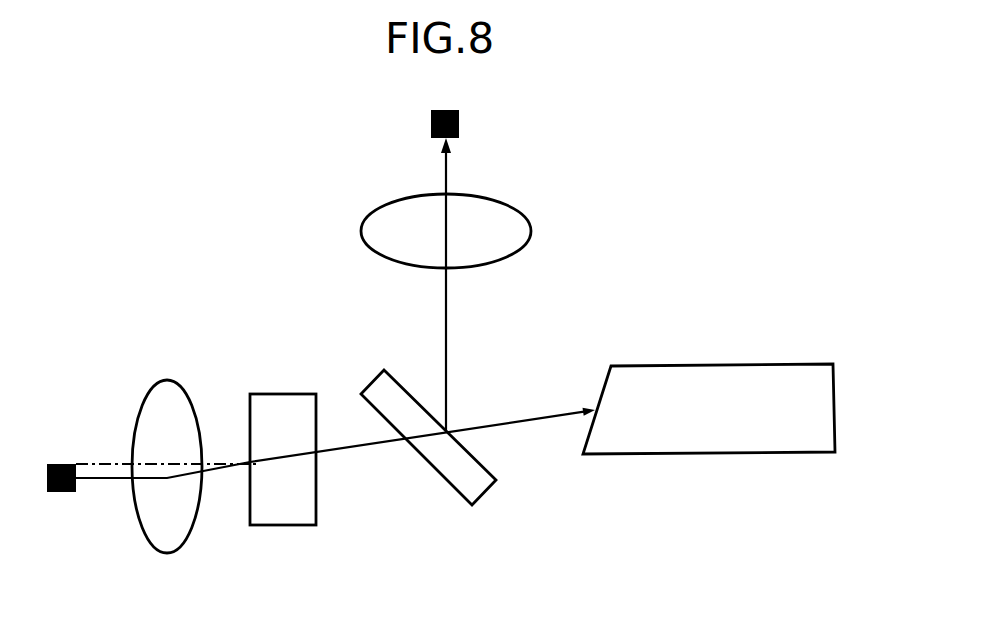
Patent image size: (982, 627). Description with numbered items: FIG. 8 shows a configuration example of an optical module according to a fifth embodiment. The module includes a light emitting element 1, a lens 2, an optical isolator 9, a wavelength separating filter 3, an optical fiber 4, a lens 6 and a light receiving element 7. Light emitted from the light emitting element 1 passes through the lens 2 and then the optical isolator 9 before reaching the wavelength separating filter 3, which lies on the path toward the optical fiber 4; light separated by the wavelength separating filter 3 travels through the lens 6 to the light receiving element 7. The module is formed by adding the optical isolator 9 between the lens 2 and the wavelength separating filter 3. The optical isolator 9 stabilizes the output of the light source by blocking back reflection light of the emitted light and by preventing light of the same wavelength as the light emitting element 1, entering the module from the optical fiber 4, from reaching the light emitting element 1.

The light emitting element 1 is at (61, 464).
The lens 2 is at (165, 380).
The optical isolator 9 is at (270, 394).
The wavelength separating filter 3 is at (366, 392).
The optical fiber 4 is at (668, 366).
The lens 6 is at (531, 228).
The light receiving element 7 is at (459, 120).